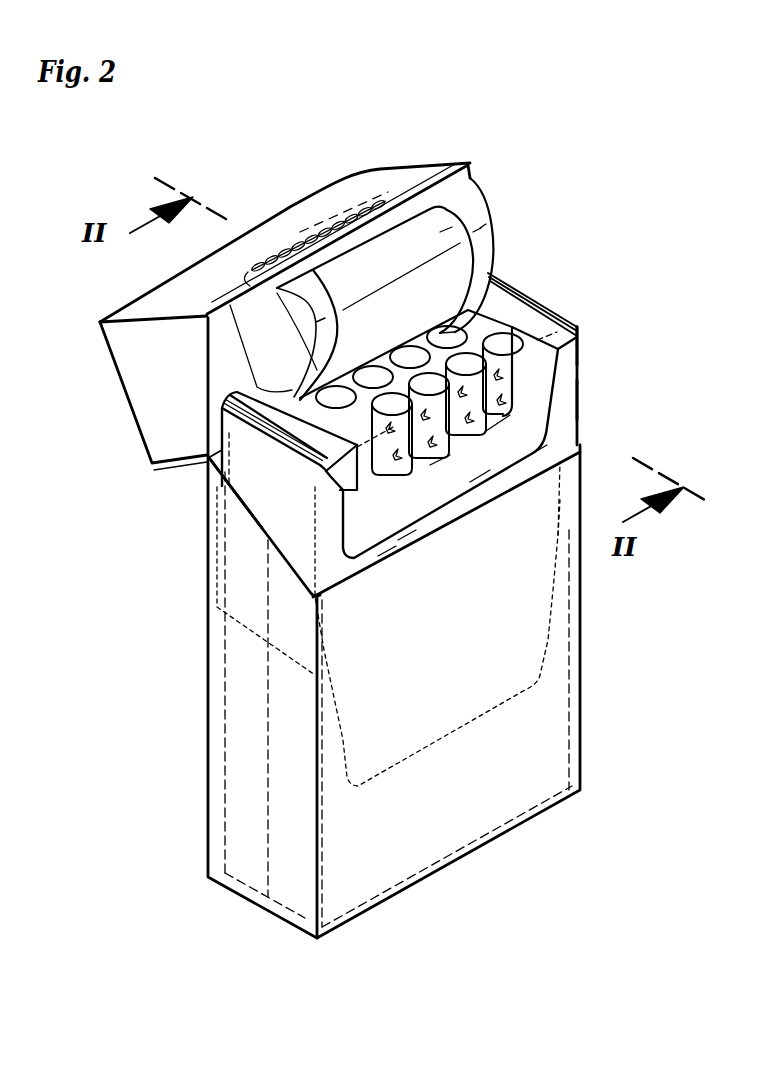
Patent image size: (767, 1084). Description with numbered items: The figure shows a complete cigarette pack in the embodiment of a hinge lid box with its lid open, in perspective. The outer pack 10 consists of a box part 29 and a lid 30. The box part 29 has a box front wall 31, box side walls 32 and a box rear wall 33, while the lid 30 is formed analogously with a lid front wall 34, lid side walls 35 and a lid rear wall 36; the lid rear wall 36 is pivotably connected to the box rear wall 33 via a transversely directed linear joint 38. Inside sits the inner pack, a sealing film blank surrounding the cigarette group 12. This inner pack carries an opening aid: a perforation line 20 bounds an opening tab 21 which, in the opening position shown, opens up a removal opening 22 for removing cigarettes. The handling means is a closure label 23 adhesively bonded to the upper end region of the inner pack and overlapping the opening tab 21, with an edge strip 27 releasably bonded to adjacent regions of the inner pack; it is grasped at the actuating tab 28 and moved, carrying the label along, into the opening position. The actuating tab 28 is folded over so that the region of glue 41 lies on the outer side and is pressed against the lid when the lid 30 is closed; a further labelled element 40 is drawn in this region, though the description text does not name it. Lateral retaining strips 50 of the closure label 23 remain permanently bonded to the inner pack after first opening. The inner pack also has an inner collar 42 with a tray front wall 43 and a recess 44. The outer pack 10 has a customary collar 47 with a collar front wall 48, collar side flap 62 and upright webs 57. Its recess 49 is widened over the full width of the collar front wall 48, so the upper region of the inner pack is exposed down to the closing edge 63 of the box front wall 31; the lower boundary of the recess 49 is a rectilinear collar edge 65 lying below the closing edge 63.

The outer pack 10 is at (147, 665).
The cigarette group 12 is at (465, 357).
The perforation line 20 is at (283, 386).
The opening tab 21 is at (475, 195).
The removal opening 22 is at (558, 355).
The closure label 23 is at (504, 218).
The edge strip 27 is at (415, 207).
The actuating tab 28 is at (390, 193).
The box part 29 is at (170, 784).
The lid 30 is at (270, 146).
The box front wall 31 is at (420, 815).
The box side walls 32 is at (248, 720).
The box rear wall 33 is at (278, 512).
The lid front wall 34 is at (254, 253).
The lid side walls 35 is at (135, 350).
The lid rear wall 36 is at (170, 468).
The linear joint 38 is at (207, 463).
The inner curved edge 40 is at (443, 207).
The glue 41 is at (320, 232).
The inner collar 42 is at (526, 441).
The tray front wall 43 is at (463, 477).
The recess 44 is at (427, 460).
The collar 47 is at (600, 403).
The collar front wall 48 is at (387, 550).
The recess 49 is at (407, 535).
The retaining strips 50 is at (548, 322).
The webs 57 is at (553, 392).
The collar side flap 62 is at (562, 322).
The closing edge 63 is at (510, 492).
The collar edge 65 is at (540, 470).